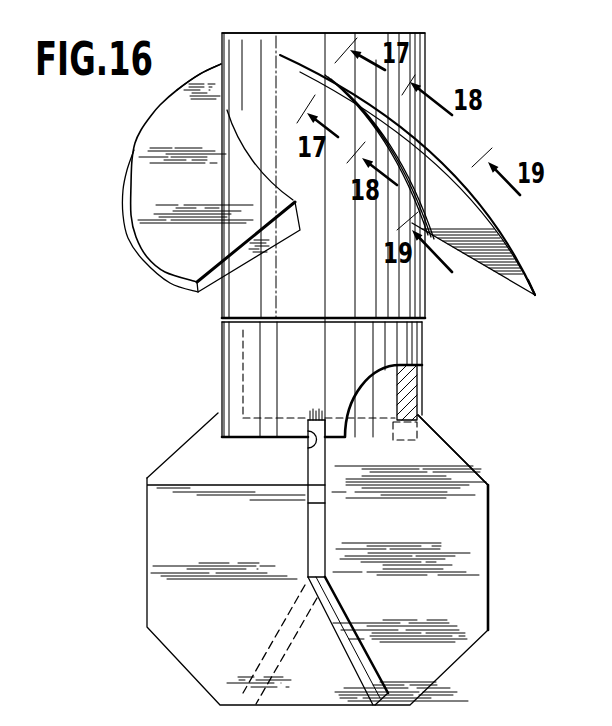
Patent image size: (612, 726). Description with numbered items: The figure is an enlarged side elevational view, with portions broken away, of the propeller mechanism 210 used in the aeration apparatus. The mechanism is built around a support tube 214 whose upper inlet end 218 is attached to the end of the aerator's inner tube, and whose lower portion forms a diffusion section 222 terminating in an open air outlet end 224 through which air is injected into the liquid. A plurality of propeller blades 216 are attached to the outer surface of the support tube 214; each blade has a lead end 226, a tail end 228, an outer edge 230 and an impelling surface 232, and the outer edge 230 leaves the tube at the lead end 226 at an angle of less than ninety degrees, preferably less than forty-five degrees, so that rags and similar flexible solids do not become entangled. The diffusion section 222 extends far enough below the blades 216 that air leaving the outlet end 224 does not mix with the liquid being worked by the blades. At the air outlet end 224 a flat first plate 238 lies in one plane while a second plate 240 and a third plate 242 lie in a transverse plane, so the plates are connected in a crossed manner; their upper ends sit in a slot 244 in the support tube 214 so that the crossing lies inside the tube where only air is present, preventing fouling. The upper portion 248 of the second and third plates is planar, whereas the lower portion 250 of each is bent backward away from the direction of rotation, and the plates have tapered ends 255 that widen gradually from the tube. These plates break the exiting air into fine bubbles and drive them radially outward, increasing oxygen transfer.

The propeller mechanism 210 is at (228, 363).
The support tube 214 is at (238, 300).
The propeller blades 216 is at (172, 263).
The inlet end 218 is at (428, 40).
The diffusion section 222 is at (487, 510).
The air outlet end 224 is at (392, 436).
The lead end 226 is at (312, 67).
The tail end 228 is at (266, 252).
The outer edge 230 is at (130, 217).
The impelling surface 232 is at (459, 222).
The plate 238 is at (482, 590).
The second plate 240 is at (333, 595).
The third plate 242 is at (273, 643).
The slot 244 is at (312, 437).
The upper portion 248 is at (328, 508).
The lower portion 250 is at (365, 655).
The tapered ends 255 is at (180, 448).